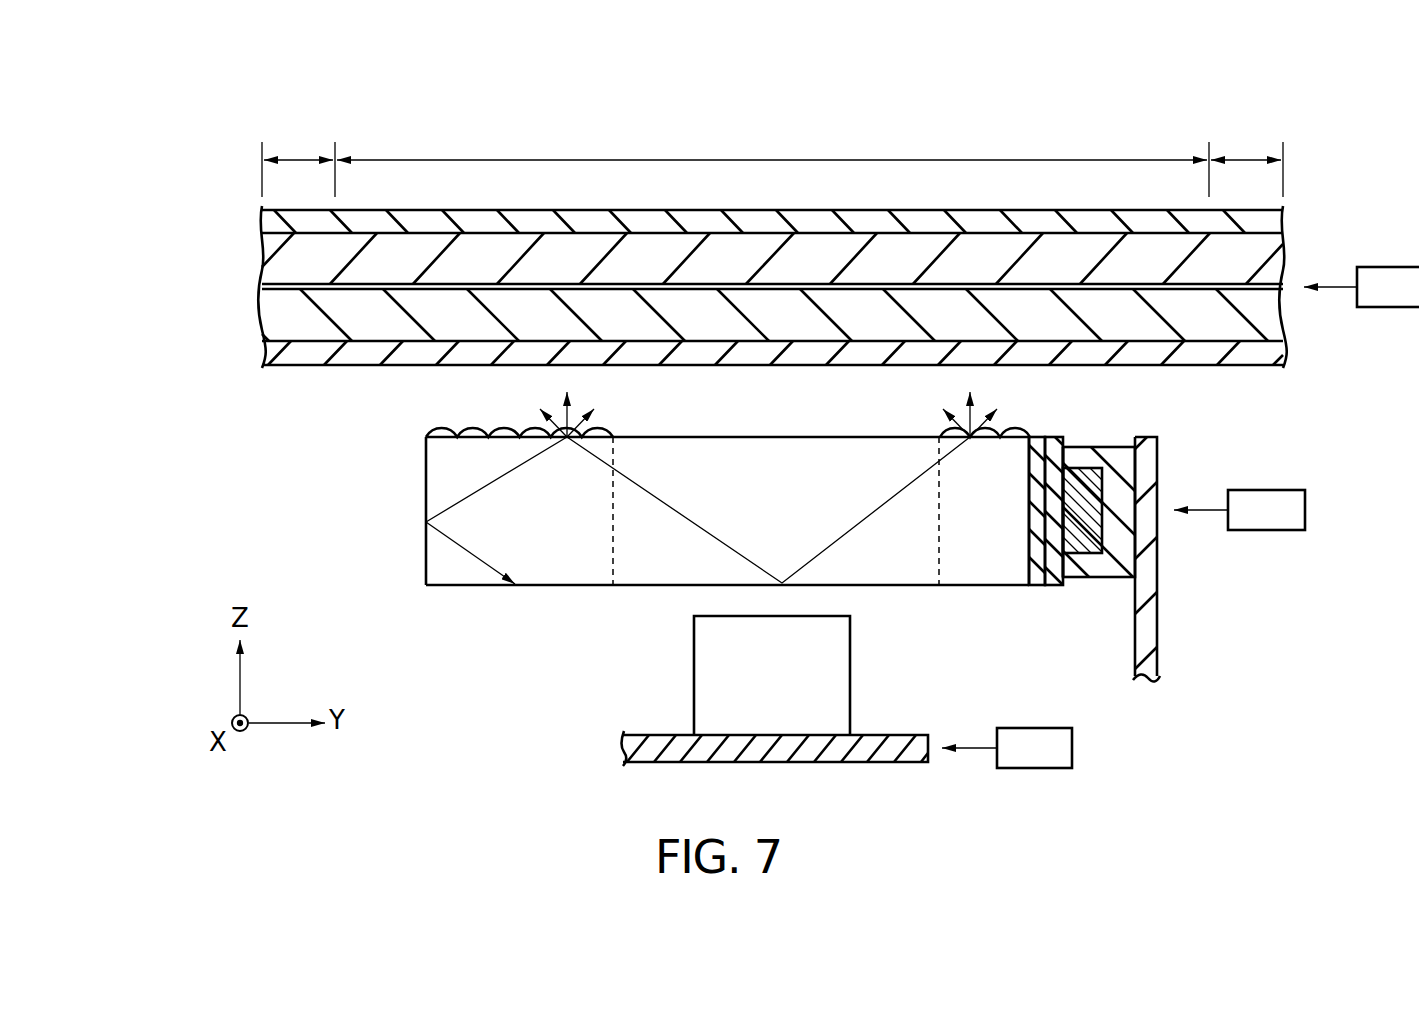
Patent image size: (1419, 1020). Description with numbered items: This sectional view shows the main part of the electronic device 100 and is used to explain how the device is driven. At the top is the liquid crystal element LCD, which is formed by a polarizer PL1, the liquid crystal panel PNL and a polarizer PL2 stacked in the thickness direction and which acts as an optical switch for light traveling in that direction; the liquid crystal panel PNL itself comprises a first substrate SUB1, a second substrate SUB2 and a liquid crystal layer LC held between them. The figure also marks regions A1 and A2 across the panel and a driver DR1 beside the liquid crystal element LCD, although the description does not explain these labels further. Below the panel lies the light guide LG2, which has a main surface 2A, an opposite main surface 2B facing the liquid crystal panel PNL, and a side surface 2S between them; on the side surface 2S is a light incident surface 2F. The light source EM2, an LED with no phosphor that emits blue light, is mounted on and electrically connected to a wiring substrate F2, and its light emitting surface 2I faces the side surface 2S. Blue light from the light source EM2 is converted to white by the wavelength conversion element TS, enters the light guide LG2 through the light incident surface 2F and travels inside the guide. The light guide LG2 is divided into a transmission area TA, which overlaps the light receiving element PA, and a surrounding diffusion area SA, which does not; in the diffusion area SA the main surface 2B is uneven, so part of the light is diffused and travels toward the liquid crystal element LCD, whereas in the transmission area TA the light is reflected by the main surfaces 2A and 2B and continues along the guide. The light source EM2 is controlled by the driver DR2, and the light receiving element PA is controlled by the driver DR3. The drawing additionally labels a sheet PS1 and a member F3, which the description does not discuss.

The electronic device 100 is at (743, 431).
The liquid crystal element LCD is at (738, 285).
The liquid crystal panel PNL is at (677, 285).
The polarizer PL2 is at (265, 220).
The second substrate SUB2 is at (268, 260).
The liquid crystal layer LC is at (262, 290).
The first substrate SUB1 is at (266, 325).
The polarizer PL1 is at (266, 354).
The non-display area A1 is at (772, 161).
The display area A2 is at (772, 142).
The first direction DR1 is at (1361, 287).
The driver DR2 is at (1239, 510).
The driver DR3 is at (1007, 748).
The light guide LG2 is at (691, 509).
The main surface 2A is at (643, 590).
The main surface 2B is at (643, 432).
The side surface 2S is at (410, 484).
The light incident surface 2F is at (1036, 500).
The light emitting surface 2I is at (1050, 508).
The diffusion area SA is at (466, 416).
The transmission area TA is at (806, 432).
The first prism sheet PS1 is at (1036, 448).
The wavelength conversion element TS is at (1058, 446).
The light source EM2 is at (1118, 452).
The wiring substrate F2 is at (1152, 632).
The third frame F3 is at (838, 763).
The light receiving element PA is at (877, 682).